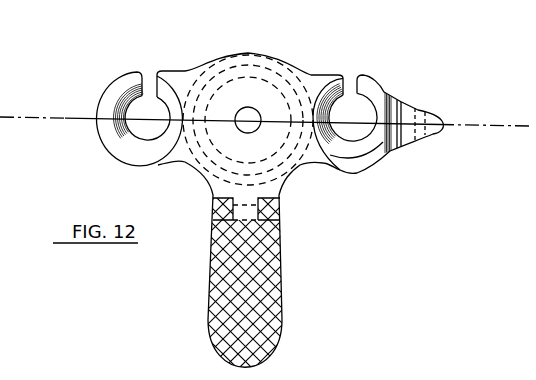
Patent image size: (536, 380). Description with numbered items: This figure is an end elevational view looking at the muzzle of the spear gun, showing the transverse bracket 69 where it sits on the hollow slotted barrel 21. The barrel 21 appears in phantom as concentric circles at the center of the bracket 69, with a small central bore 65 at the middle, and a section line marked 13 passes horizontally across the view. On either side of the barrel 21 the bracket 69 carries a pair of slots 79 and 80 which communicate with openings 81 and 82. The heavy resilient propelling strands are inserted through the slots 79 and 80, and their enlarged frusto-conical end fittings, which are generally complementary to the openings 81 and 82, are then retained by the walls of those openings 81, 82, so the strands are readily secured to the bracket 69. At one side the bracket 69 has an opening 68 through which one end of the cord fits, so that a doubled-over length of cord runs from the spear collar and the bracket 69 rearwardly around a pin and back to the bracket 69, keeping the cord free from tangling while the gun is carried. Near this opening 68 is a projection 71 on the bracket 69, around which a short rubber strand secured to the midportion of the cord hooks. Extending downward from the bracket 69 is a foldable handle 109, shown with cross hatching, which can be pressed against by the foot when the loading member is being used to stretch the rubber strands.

The section line 13- 13 is at (10, 95).
The hollow slotted barrel 21 is at (247, 67).
The central bore 65 is at (249, 109).
The opening 68 is at (416, 107).
The transverse bracket 69 is at (90, 66).
The projection 71 is at (426, 133).
The slot 79 is at (146, 88).
The slot 80 is at (348, 90).
The opening 81 is at (134, 131).
The opening 82 is at (348, 136).
The foldable handle 109 is at (263, 308).